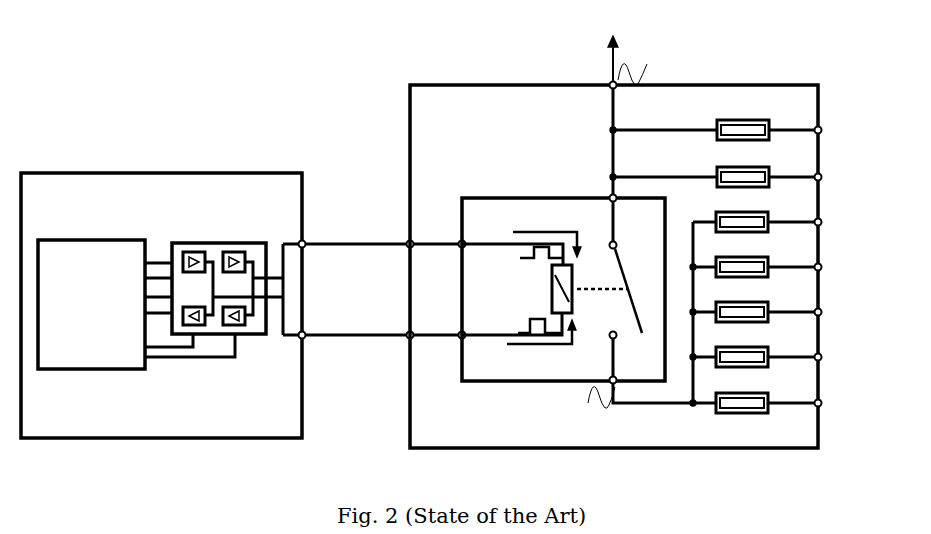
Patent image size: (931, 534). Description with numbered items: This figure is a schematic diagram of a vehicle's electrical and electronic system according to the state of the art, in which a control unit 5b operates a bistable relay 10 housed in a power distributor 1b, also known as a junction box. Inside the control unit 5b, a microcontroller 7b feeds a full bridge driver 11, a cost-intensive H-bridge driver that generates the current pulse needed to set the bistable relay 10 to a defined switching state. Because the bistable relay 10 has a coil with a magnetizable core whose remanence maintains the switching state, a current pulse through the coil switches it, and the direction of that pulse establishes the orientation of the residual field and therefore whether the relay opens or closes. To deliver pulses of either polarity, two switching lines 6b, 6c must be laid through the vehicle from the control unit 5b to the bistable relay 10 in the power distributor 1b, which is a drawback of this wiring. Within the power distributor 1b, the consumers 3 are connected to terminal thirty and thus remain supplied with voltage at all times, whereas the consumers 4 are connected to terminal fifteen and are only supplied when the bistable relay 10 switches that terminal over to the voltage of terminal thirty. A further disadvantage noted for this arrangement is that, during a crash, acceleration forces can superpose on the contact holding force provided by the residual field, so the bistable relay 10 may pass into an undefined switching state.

The power distributor 1b is at (818, 84).
The consumer at terminal 30 3 is at (833, 116).
The consumer at terminal 15 4 is at (827, 210).
The control unit 5b is at (297, 168).
The switching line 6b is at (327, 240).
The switching line 6c is at (315, 332).
The microcontroller 7b is at (91, 304).
The bistable relay 10 is at (497, 193).
The full bridge driver 11 is at (187, 238).